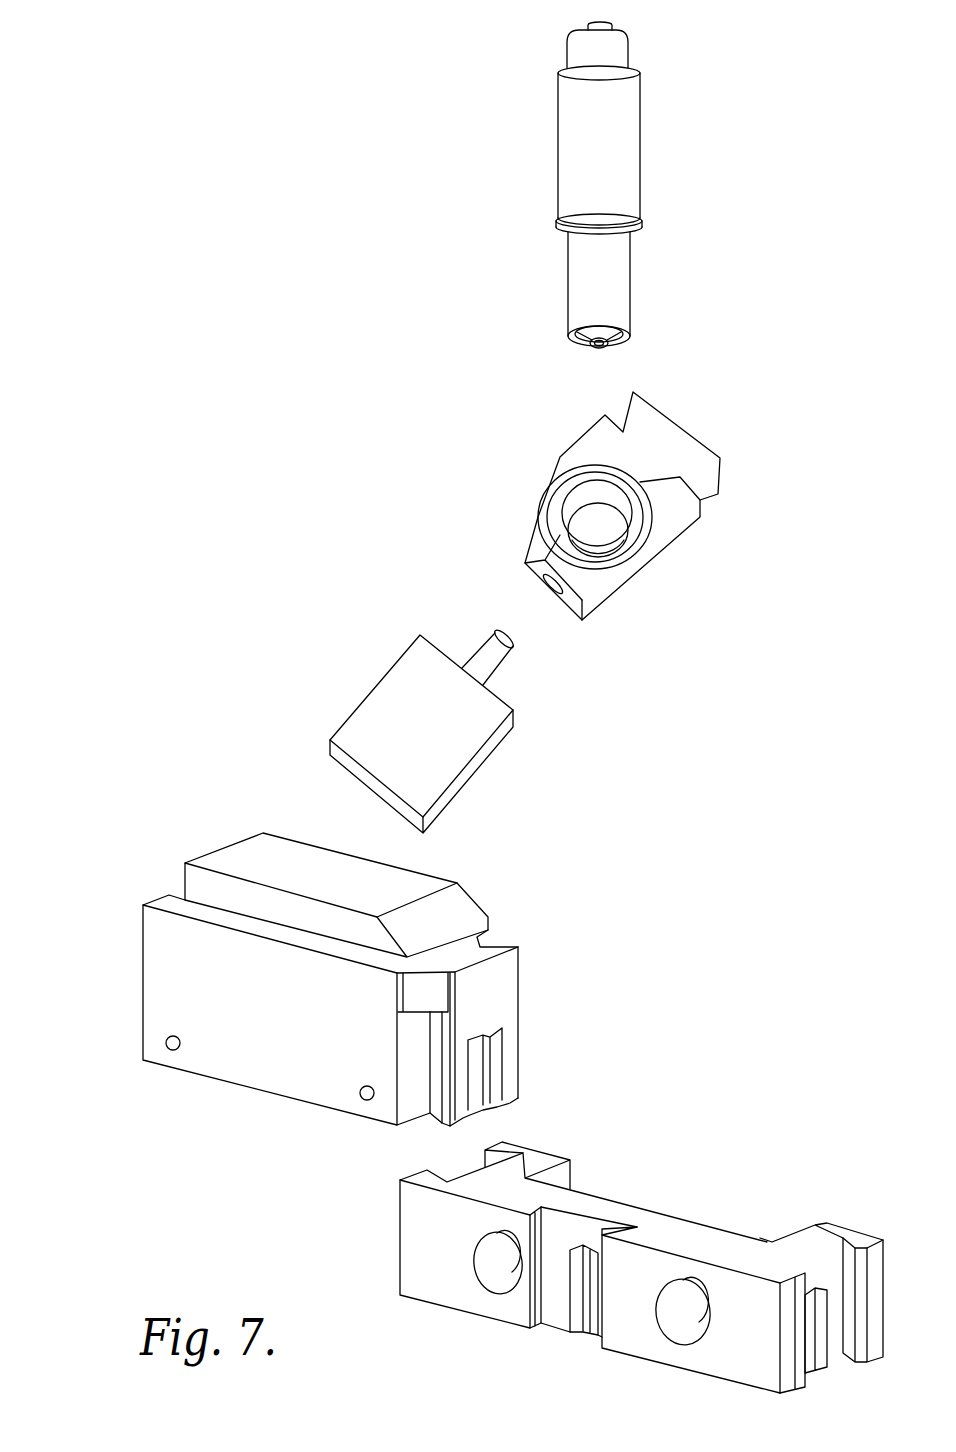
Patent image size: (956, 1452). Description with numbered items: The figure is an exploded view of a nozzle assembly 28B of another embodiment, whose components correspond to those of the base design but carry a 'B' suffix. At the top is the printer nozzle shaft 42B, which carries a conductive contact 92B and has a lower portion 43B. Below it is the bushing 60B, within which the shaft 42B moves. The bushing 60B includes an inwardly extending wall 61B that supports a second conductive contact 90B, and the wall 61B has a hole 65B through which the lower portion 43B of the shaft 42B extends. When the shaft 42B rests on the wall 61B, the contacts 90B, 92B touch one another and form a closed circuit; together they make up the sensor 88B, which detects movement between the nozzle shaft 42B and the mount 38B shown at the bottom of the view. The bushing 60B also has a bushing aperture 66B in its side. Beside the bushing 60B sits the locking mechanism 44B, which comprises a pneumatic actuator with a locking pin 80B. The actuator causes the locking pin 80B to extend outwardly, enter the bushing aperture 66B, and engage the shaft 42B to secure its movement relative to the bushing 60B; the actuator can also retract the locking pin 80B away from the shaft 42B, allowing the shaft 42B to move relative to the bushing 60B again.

The nozzle assembly 28B is at (97, 150).
The nozzle shaft 42B is at (565, 118).
The conductive contact 92B is at (642, 223).
The lower portion of the shaft 43B is at (625, 281).
The sensor 88B is at (676, 363).
The bushing 60B is at (603, 440).
The inwardly extending wall 61B is at (606, 505).
The conductive contact 90B is at (636, 530).
The hole 65B is at (614, 549).
The bushing aperture 66B is at (536, 586).
The locking mechanism 44B is at (474, 786).
The locking pin 80B is at (498, 664).
The mount 38B is at (679, 1211).